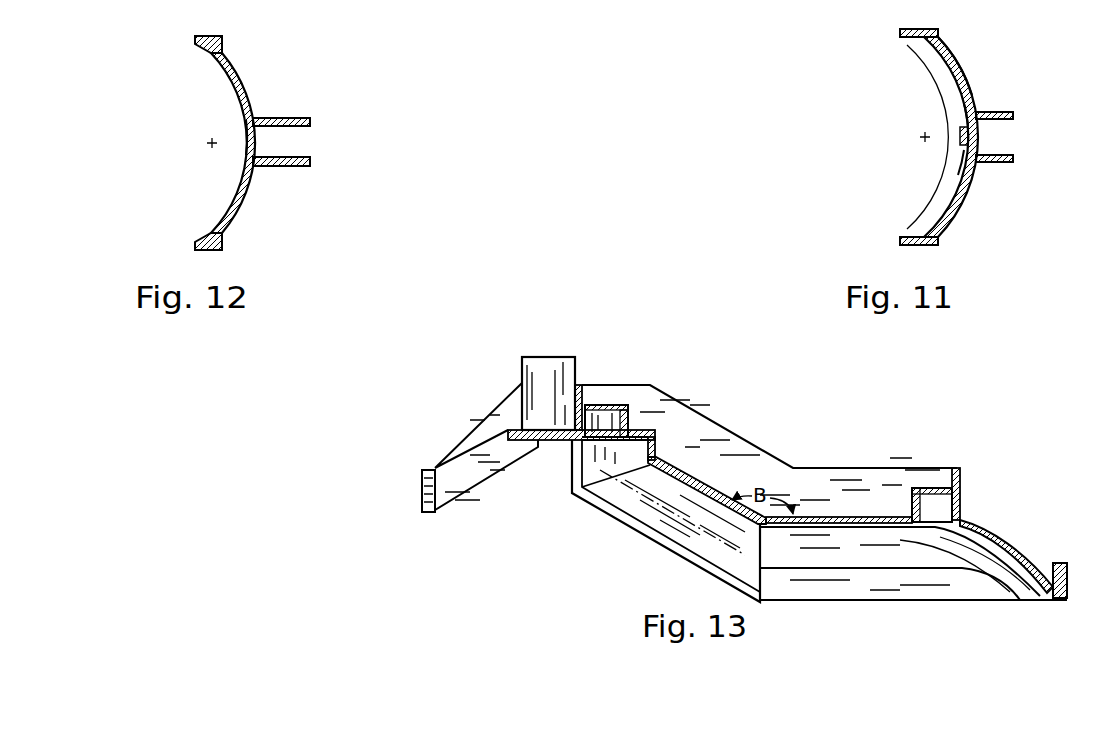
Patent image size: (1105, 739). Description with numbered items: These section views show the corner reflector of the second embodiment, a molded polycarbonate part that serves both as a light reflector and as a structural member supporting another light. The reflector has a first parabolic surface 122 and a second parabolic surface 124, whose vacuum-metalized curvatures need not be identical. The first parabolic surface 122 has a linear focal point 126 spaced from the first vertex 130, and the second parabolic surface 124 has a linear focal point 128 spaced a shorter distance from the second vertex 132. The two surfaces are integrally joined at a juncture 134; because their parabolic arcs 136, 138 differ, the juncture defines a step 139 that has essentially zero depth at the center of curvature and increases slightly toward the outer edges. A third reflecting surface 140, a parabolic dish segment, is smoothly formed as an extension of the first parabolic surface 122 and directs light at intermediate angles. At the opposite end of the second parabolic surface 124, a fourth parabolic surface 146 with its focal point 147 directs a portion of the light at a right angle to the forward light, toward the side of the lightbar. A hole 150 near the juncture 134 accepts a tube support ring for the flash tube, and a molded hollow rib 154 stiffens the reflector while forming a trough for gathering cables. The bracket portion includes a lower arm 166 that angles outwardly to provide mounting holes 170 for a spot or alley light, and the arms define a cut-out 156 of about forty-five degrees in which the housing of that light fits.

In FIG. 13, the first parabolic surface 122 is at (878, 559).
In FIG. 13, the second parabolic surface 124 is at (679, 516).
In FIG. 11, the linear focal point 126 is at (925, 137).
In FIG. 13, the linear focal point 126 is at (887, 573).
In FIG. 12, the linear focal point 128 is at (212, 143).
In FIG. 13, the linear focal point 128 is at (716, 568).
In FIG. 11, the first vertex 130 is at (962, 133).
In FIG. 12, the second vertex 132 is at (246, 137).
In FIG. 13, the juncture 134 is at (762, 562).
In FIG. 11, the parabolic arc 136 is at (953, 108).
In FIG. 12, the parabolic arc 138 is at (228, 210).
In FIG. 11, the parabolic arc 138 is at (928, 81).
In FIG. 11, the step 139 is at (930, 43).
In FIG. 13, the third reflecting surface 140 is at (1018, 582).
In FIG. 13, the fourth parabolic surface 146 is at (626, 467).
In FIG. 13, the focal point 147 is at (577, 453).
In FIG. 11, the hole 150 is at (960, 163).
In FIG. 12, the hollow rib 154 is at (277, 118).
In FIG. 11, the hollow rib 154 is at (993, 112).
In FIG. 13, the hollow rib 154 is at (720, 420).
In FIG. 13, the cut-out 156 is at (622, 425).
In FIG. 13, the lower arm 166 is at (437, 508).
In FIG. 13, the mounting holes 170 is at (422, 494).